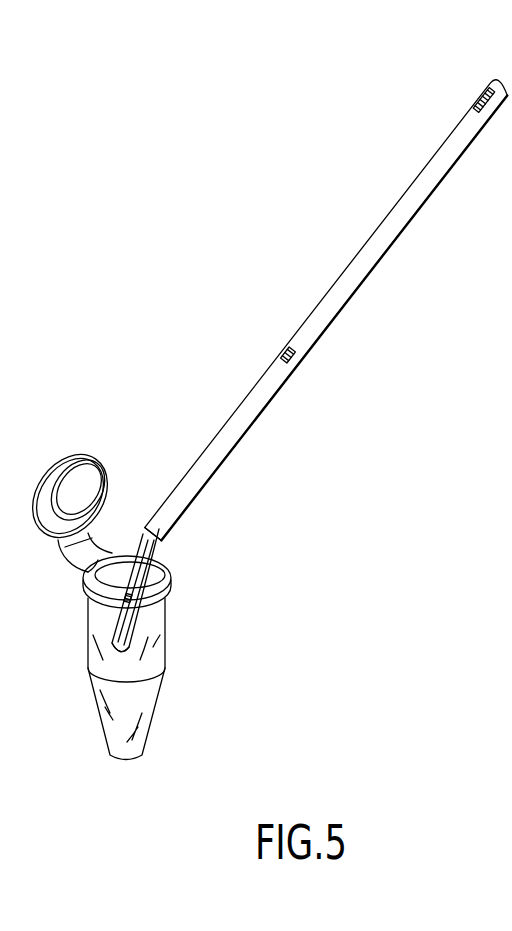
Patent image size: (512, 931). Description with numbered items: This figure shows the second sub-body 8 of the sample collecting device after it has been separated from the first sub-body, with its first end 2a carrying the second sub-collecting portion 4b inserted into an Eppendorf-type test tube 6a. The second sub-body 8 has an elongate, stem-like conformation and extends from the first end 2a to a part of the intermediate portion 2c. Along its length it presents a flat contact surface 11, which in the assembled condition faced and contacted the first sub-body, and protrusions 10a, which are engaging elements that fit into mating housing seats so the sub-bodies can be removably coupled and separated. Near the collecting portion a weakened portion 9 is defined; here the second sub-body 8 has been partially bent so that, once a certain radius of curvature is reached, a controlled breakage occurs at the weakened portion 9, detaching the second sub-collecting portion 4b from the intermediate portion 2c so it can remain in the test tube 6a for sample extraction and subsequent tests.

The second sub-body 8 is at (400, 243).
The contact surface 11 is at (410, 203).
The intermediate portion 2c is at (355, 296).
The weakened portion 9 is at (162, 540).
The first end 2a is at (120, 632).
The second sub-collecting portion 4b is at (118, 648).
The protrusion 10a is at (480, 97).
The Eppendorf-type test tube 6a is at (167, 642).